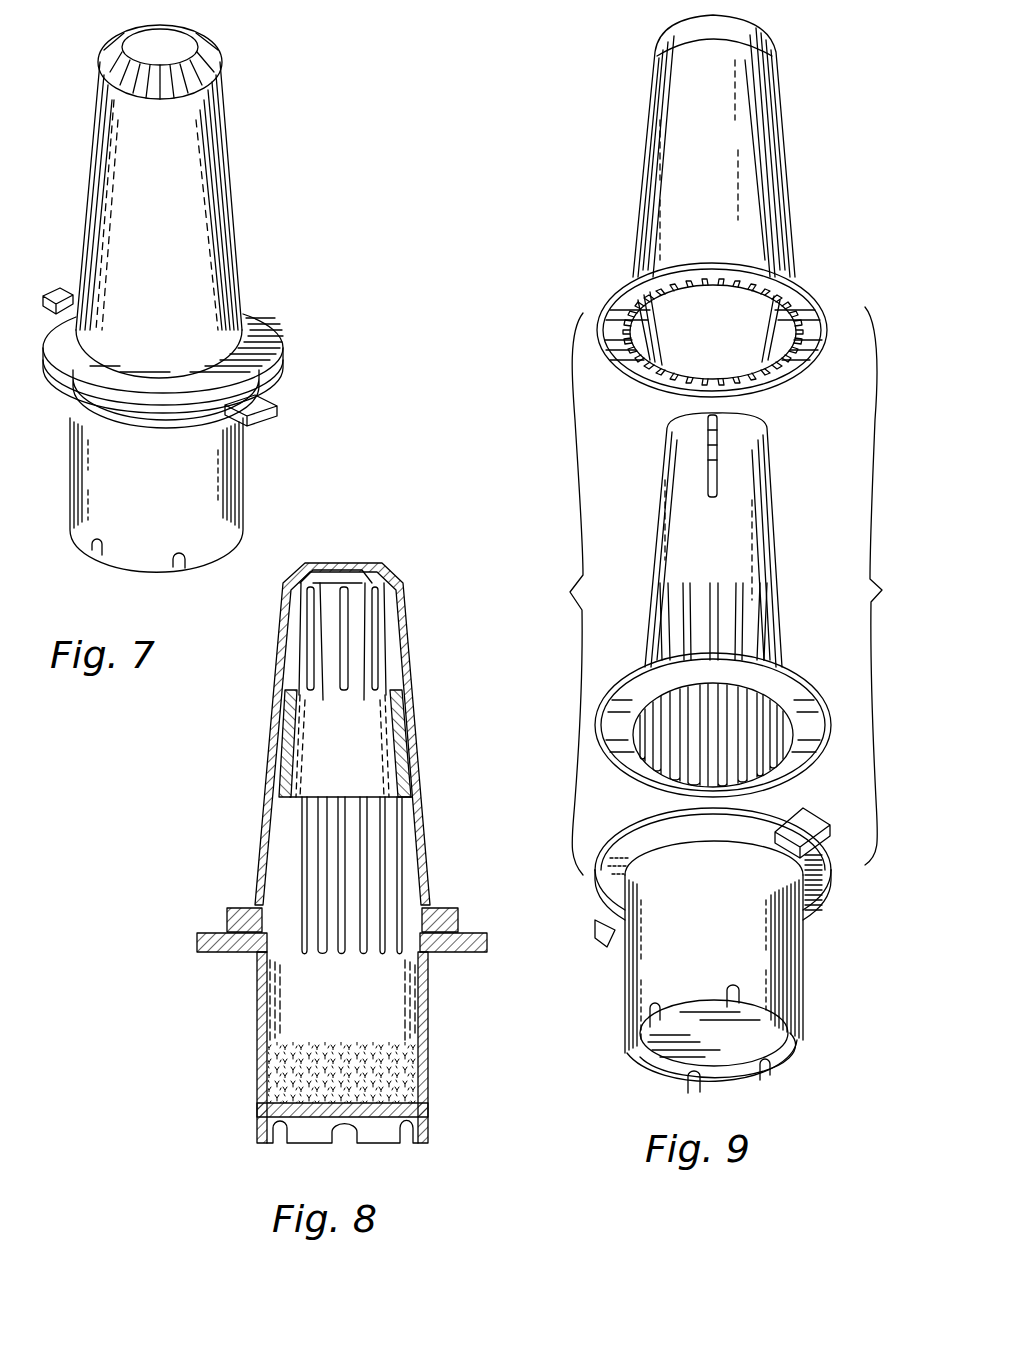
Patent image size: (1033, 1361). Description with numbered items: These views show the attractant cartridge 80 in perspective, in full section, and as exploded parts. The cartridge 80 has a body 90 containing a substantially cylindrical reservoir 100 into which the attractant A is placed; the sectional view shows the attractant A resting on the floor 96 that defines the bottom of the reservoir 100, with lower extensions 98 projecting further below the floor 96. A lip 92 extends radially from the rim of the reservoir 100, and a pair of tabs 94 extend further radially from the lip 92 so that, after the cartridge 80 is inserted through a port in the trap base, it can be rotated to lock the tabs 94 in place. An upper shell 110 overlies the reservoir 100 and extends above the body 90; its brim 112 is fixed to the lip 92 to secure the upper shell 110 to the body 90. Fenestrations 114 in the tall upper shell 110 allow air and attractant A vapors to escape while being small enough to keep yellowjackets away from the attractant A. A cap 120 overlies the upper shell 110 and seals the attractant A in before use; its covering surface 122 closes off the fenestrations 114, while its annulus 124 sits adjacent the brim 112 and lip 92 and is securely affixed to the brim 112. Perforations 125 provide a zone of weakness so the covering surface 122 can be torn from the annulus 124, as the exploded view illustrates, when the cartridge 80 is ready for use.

In FIG. 7, the cartridge 80 is at (312, 245).
In FIG. 8, the cartridge 80 is at (244, 826).
In FIG. 9, the cartridge 80 is at (560, 518).
In FIG. 7, the body 90 is at (72, 455).
In FIG. 8, the body 90 is at (262, 1024).
In FIG. 9, the body 90 is at (806, 975).
In FIG. 7, the lip 92 is at (62, 396).
In FIG. 8, the lip 92 is at (205, 944).
In FIG. 9, the lip 92 is at (812, 906).
In FIG. 7, the tabs 94 is at (57, 288).
In FIG. 9, the tabs 94 is at (812, 806).
In FIG. 8, the floor 96 is at (314, 1117).
In FIG. 9, the floor 96 is at (765, 1038).
In FIG. 7, the lower extensions 98 is at (130, 572).
In FIG. 8, the lower extensions 98 is at (430, 1132).
In FIG. 9, the lower extensions 98 is at (657, 1082).
In FIG. 8, the reservoir 100 is at (361, 1007).
In FIG. 8, the upper shell 110 is at (290, 745).
In FIG. 9, the upper shell 110 is at (786, 563).
In FIG. 7, the brim 112 is at (276, 374).
In FIG. 8, the brim 112 is at (445, 920).
In FIG. 9, the brim 112 is at (795, 677).
In FIG. 8, the fenestrations 114 is at (335, 637).
In FIG. 9, the fenestrations 114 is at (676, 476).
In FIG. 7, the cap 120 is at (202, 150).
In FIG. 8, the cap 120 is at (415, 723).
In FIG. 9, the cap 120 is at (630, 127).
In FIG. 9, the covering surface 122 is at (768, 146).
In FIG. 7, the annulus 124 is at (270, 326).
In FIG. 8, the annulus 124 is at (244, 908).
In FIG. 9, the annulus 124 is at (626, 305).
In FIG. 9, the perforations 125 is at (770, 365).
In FIG. 8, the attractant A is at (362, 1095).